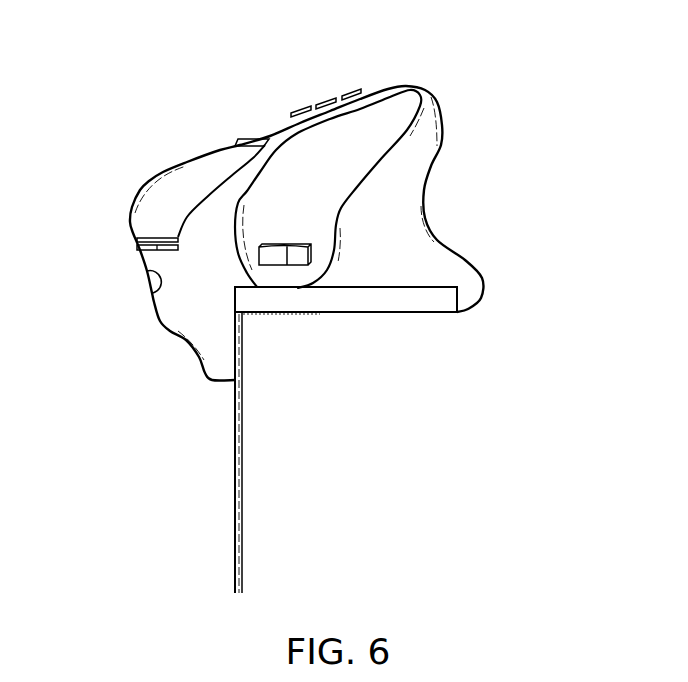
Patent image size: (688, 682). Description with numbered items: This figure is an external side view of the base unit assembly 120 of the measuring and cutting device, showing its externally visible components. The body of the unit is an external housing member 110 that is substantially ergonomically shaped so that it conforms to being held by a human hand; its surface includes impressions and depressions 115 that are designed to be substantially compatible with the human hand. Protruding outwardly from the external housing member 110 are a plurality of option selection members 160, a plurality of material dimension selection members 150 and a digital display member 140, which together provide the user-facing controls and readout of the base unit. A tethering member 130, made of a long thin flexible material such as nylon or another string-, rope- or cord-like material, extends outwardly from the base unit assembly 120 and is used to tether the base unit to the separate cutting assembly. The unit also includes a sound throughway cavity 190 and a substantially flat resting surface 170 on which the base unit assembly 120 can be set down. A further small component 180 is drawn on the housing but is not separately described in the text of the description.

The external housing member 110 is at (422, 148).
The impressions and depressions 115 is at (382, 117).
The base unit assembly 120 is at (442, 112).
The tethering member 130 is at (240, 446).
The digital display member 140 is at (182, 168).
The material dimension selection members 150 is at (138, 245).
The option selection members 160 is at (356, 91).
The substantially flat resting surface 170 is at (380, 307).
The box 180 is at (307, 248).
The sound throughway cavity 190 is at (150, 287).